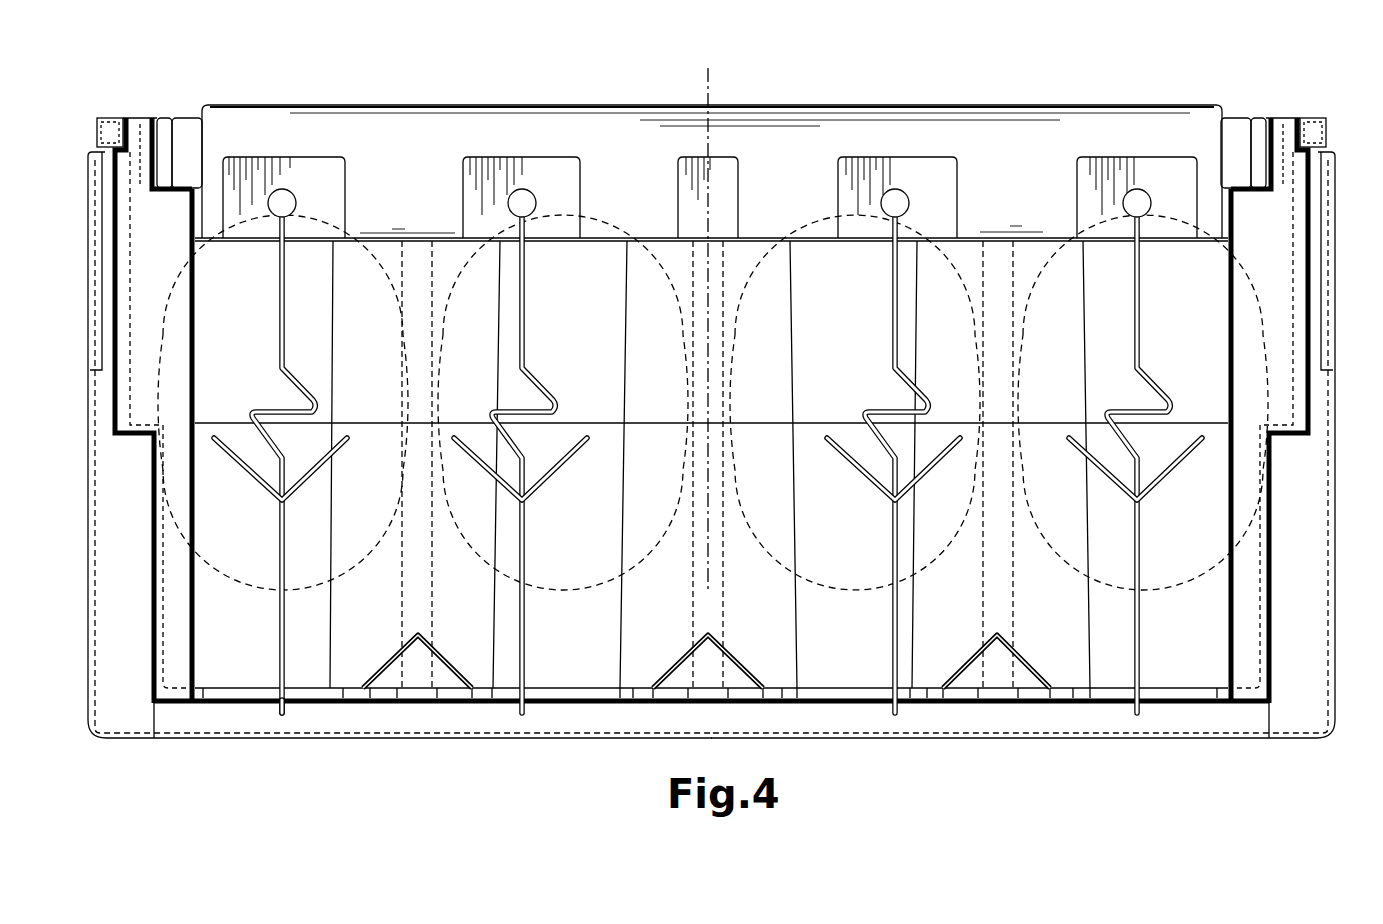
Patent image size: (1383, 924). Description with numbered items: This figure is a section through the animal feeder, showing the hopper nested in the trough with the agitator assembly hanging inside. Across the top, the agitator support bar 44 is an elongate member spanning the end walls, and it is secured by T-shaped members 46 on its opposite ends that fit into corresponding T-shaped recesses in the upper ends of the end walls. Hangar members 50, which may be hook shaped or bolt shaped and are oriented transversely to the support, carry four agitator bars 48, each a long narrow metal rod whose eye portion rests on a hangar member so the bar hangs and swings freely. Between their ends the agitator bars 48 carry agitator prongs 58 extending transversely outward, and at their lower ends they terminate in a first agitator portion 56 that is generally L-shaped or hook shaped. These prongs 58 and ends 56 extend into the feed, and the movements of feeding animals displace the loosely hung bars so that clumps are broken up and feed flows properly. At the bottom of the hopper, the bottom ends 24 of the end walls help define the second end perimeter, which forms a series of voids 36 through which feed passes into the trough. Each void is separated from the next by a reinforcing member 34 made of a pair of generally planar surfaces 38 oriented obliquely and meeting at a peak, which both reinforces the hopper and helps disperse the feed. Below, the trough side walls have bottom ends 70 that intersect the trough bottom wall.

The second, bottom, ends of end walls 24 is at (197, 689).
The reinforcing member 34 is at (378, 654).
The voids 36 is at (573, 674).
The generally planar surfaces 38 is at (388, 684).
The agitator support bar 44 is at (773, 135).
The T-shaped members 46 is at (186, 140).
The agitator bars 48 is at (279, 318).
The hangar members 50 is at (522, 200).
The first agitator portion 56 is at (277, 714).
The agitator prongs 58 is at (262, 490).
The second, bottom, ends of trough side walls 70 is at (433, 705).